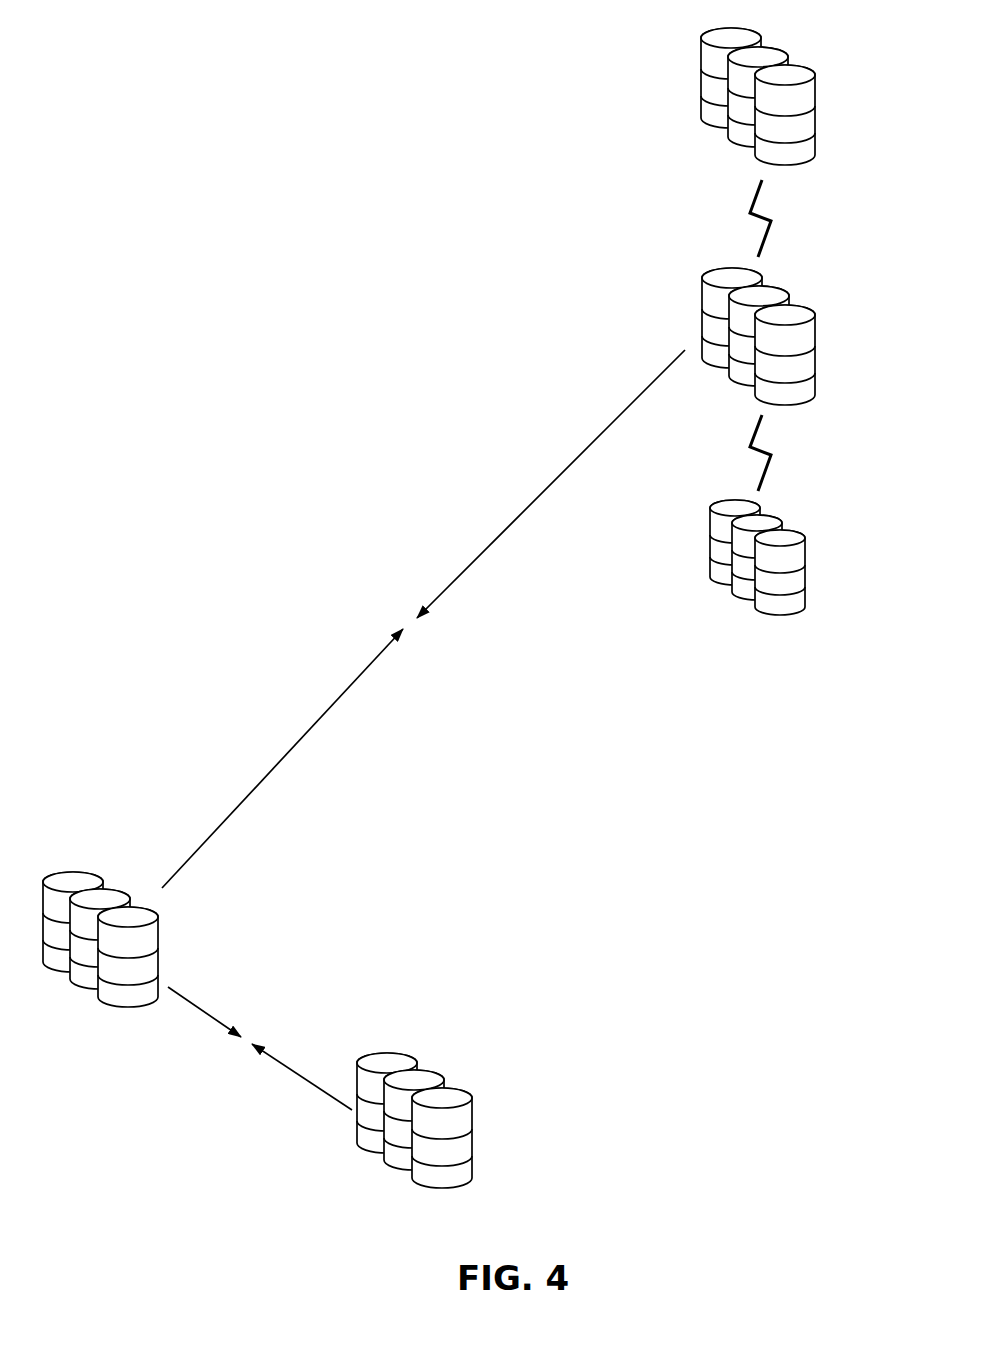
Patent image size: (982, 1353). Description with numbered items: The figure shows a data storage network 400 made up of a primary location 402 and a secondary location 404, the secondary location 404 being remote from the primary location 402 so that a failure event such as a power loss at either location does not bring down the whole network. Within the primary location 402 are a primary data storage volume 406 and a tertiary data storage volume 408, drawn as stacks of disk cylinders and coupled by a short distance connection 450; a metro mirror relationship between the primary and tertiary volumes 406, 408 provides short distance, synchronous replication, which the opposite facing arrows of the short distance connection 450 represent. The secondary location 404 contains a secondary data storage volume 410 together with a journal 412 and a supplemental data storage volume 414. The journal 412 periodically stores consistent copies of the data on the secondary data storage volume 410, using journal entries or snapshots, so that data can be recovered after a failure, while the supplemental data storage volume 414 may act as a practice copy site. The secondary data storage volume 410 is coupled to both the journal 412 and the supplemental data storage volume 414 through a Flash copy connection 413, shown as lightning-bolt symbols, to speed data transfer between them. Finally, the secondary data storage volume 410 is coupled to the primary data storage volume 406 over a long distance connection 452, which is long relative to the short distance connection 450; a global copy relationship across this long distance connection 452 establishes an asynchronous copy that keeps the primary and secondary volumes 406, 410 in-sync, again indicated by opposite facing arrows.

The data storage network 400 is at (110, 190).
The primary location 402 is at (396, 952).
The secondary location 404 is at (538, 242).
The primary data storage volume 406 is at (88, 995).
The tertiary data storage volume 408 is at (402, 1173).
The secondary data storage volume 410 is at (746, 387).
The journal 412 is at (748, 600).
The Flash copy connection 413 is at (772, 235).
The supplemental data storage volume 414 is at (746, 143).
The short distance connection 450 is at (260, 1048).
The long distance connection 452 is at (423, 619).